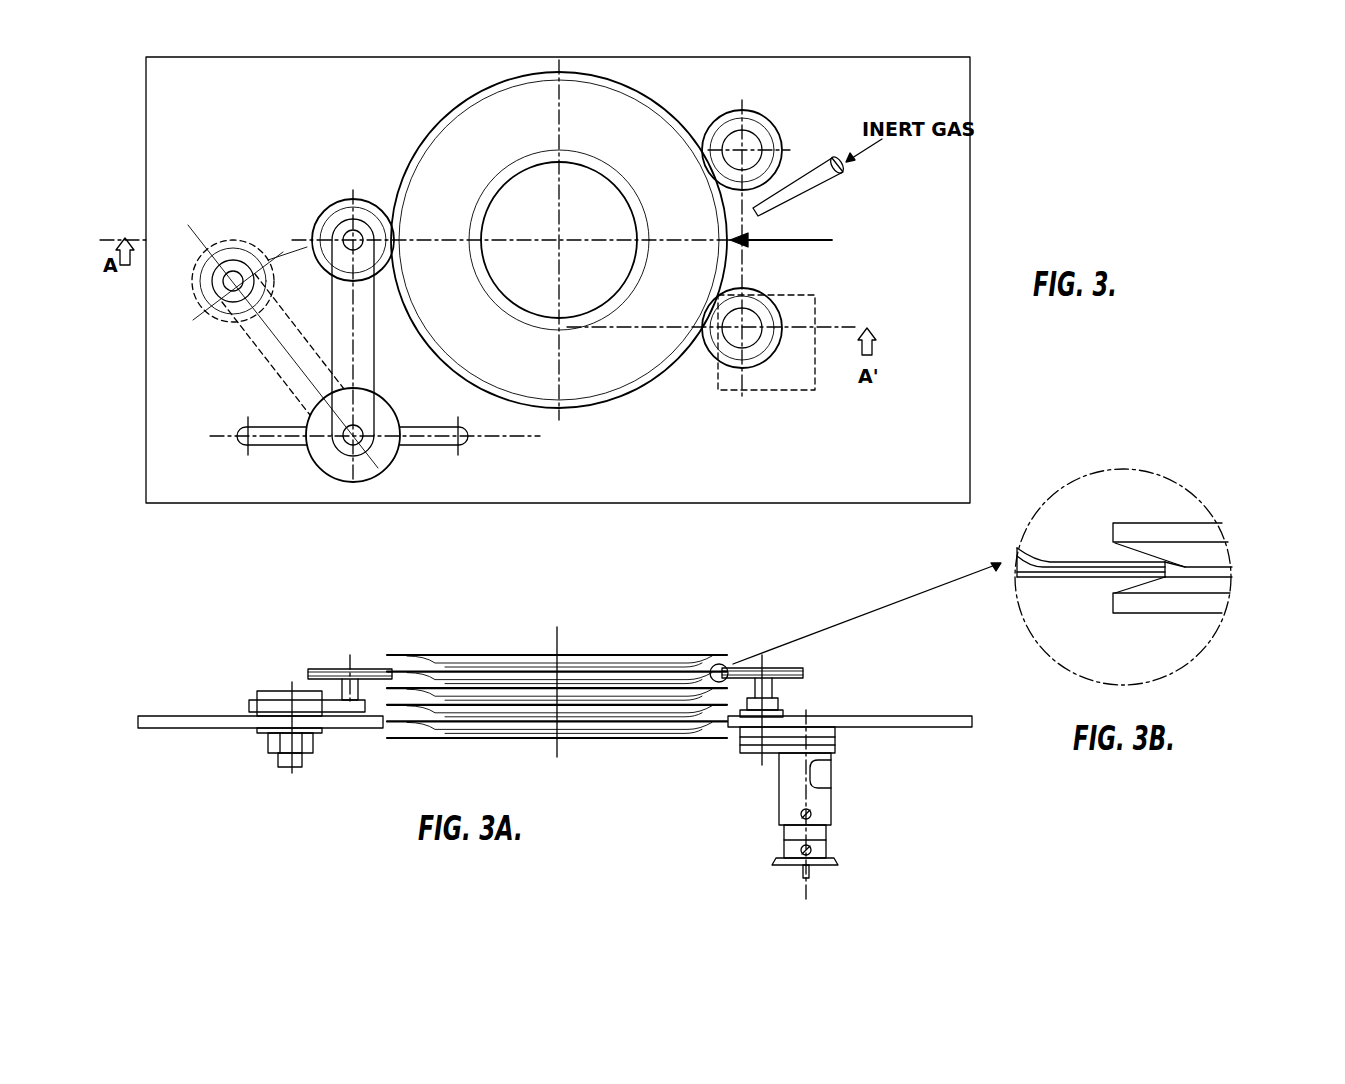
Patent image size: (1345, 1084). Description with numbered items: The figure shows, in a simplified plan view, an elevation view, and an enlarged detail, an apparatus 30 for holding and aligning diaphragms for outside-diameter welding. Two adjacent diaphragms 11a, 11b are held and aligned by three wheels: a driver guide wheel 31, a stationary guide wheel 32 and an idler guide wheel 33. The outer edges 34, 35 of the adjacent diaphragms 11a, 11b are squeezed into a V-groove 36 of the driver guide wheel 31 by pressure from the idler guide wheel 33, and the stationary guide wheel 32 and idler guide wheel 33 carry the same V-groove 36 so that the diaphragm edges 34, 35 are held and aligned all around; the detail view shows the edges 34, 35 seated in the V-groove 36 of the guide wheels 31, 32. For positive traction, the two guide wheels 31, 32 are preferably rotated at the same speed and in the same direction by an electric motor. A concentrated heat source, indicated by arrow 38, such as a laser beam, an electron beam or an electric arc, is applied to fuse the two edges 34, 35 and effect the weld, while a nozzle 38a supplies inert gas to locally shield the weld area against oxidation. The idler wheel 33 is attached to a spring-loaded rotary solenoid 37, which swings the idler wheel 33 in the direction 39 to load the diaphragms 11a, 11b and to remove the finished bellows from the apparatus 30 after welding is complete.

In FIG. 3, the apparatus 30 is at (985, 230).
In FIG. 3, the diaphragm 11a is at (637, 130).
In FIG. 3B, the diaphragm 11a is at (1040, 555).
In FIG. 3, the diaphragm 11b is at (559, 240).
In FIG. 3B, the diaphragm 11b is at (1083, 572).
In FIG. 3, the driver guide wheel 31 is at (758, 291).
In FIG. 3B, the driver guide wheel 31 is at (1218, 572).
In FIG. 3, the stationary guide wheel 32 is at (775, 130).
In FIG. 3, the idler guide wheel 33 is at (333, 207).
In FIG. 3B, the outer edge 34 is at (1175, 565).
In FIG. 3B, the outer edge 35 is at (1218, 612).
In FIG. 3B, the V-groove 36 is at (1170, 577).
In FIG. 3, the spring-loaded rotary solenoid 37 is at (313, 468).
In FIG. 3, the arrow 38 is at (814, 238).
In FIG. 3, the nozzle 38a is at (812, 172).
In FIG. 3, the direction 39 is at (287, 220).